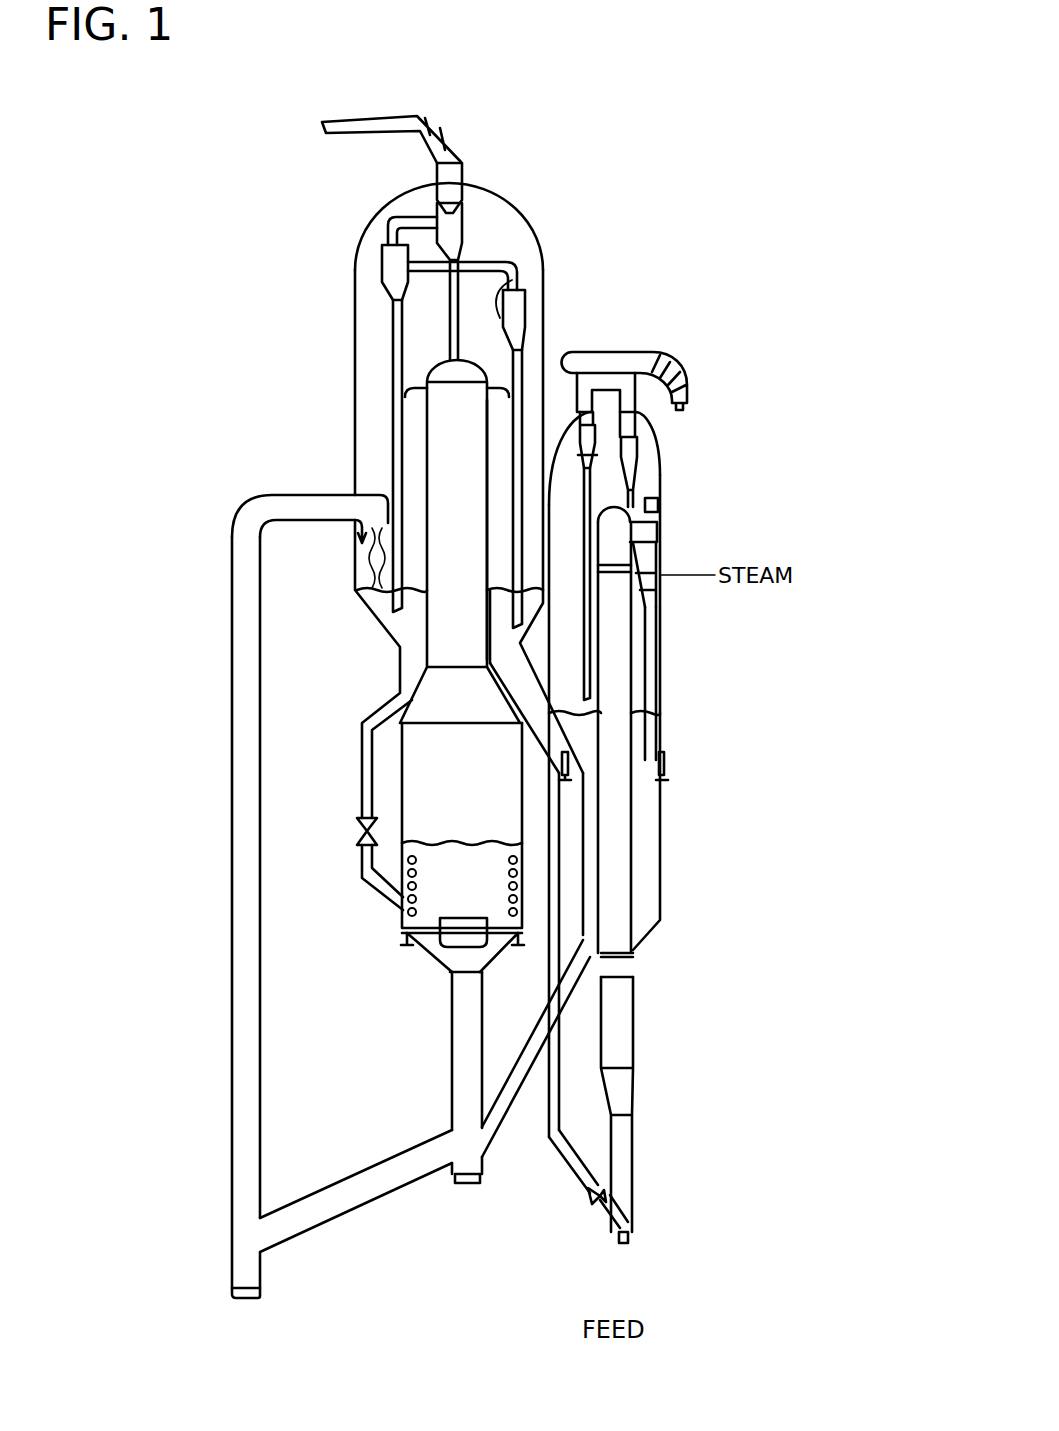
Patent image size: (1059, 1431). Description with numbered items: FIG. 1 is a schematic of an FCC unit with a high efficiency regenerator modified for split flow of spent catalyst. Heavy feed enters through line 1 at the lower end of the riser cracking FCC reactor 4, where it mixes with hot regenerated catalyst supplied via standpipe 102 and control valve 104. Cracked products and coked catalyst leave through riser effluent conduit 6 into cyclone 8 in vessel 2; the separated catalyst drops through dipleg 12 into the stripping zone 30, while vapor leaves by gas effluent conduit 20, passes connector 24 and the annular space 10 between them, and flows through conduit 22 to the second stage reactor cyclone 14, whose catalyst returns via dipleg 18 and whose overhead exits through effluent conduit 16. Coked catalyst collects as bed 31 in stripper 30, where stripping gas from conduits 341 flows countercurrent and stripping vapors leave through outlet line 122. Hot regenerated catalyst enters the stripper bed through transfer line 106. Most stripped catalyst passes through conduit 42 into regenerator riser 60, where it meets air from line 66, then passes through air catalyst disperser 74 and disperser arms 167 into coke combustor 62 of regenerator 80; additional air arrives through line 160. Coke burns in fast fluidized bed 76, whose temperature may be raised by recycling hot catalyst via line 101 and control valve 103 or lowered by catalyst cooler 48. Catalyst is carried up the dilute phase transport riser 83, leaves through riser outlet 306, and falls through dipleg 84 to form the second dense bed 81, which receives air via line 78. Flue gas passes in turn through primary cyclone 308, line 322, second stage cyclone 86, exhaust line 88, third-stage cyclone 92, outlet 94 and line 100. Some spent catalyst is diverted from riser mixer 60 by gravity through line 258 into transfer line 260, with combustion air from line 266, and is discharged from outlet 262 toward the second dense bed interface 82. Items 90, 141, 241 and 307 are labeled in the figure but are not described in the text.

The feed line 1 is at (624, 1243).
The vessel 2 is at (665, 712).
The riser cracking FCC reactor 4 is at (635, 1165).
The riser effluent conduit 6 is at (655, 540).
The cyclone 8 is at (660, 532).
The annular space 10 is at (660, 508).
The dipleg 12 is at (663, 652).
The second stage reactor cyclone 14 is at (580, 492).
The effluent conduit 16 is at (580, 400).
The dipleg 18 is at (588, 565).
The gas effluent conduit 20 is at (655, 510).
The conduit 22 is at (640, 470).
The connector 24 is at (660, 500).
The stripping zone 30 is at (652, 868).
The bed of catalyst 31 is at (662, 783).
The conduit 42 is at (563, 1005).
The catalyst cooler 48 is at (403, 910).
The regenerator riser 60 is at (452, 1012).
The coke combustor 62 is at (462, 828).
The air line 66 is at (470, 1183).
The air catalyst disperser 74 is at (453, 943).
The fast fluidized bed 76 is at (403, 855).
The air line 78 is at (398, 635).
The regenerator 80 is at (355, 290).
The second dense bed 81 is at (400, 663).
The second dense bed interface 82 is at (360, 585).
The dilute phase transport riser 83 is at (461, 541).
The dipleg 84 is at (510, 515).
The second stage cyclone 86 is at (382, 258).
The exhaust line 88 is at (410, 215).
The dipleg 90 is at (393, 448).
The third-stage cyclone 92 is at (470, 212).
The outlet 94 is at (462, 178).
The exhaust gas line 100 is at (430, 124).
The recycle line 101 is at (362, 740).
The standpipe 102 is at (558, 1163).
The control valve 103 is at (365, 818).
The control valve 104 is at (590, 1195).
The transfer line 106 is at (538, 695).
The outlet line 122 is at (640, 408).
The feed nozzle 141 is at (635, 1236).
The air line 160 is at (497, 975).
The disperser arms 167 is at (498, 945).
The steam line 241 is at (683, 573).
The diversion line 258 is at (325, 1228).
The transfer line 260 is at (263, 1095).
The outlet 262 is at (355, 540).
The air line 266 is at (253, 1298).
The riser outlet 306 is at (546, 385).
The cyclone gas conduit 307 is at (477, 263).
The primary cyclone 308 is at (525, 305).
The flue gas line 322 is at (518, 262).
The stripping gas conduits 341 is at (652, 893).